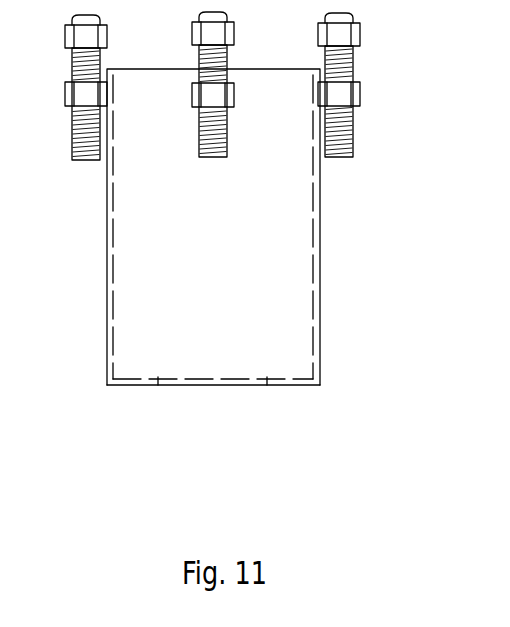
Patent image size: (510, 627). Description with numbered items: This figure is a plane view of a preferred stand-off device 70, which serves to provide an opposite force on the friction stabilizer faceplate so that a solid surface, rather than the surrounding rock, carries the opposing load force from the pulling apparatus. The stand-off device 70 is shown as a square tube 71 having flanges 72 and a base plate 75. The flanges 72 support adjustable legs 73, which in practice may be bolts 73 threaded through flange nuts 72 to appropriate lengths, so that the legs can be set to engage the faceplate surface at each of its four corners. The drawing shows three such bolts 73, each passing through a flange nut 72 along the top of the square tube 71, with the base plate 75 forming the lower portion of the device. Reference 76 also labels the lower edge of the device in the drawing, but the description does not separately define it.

The stand-off device 70 is at (365, 178).
The square tube 71 is at (320, 257).
The flange nut 72 is at (67, 88).
The adjustable leg 73 is at (72, 62).
The base plate 75 is at (124, 387).
The bottom inner flange 76 is at (220, 387).